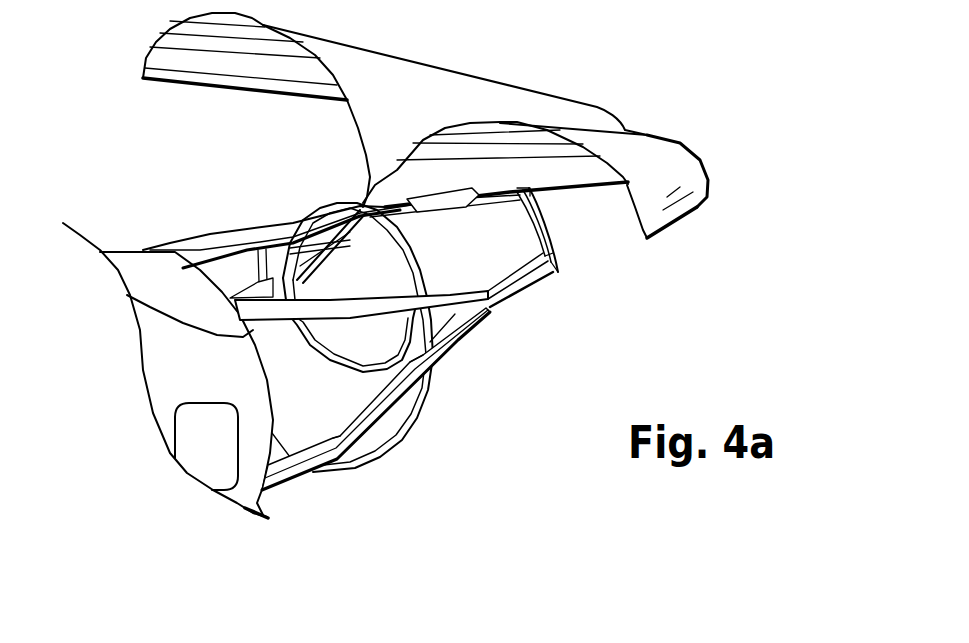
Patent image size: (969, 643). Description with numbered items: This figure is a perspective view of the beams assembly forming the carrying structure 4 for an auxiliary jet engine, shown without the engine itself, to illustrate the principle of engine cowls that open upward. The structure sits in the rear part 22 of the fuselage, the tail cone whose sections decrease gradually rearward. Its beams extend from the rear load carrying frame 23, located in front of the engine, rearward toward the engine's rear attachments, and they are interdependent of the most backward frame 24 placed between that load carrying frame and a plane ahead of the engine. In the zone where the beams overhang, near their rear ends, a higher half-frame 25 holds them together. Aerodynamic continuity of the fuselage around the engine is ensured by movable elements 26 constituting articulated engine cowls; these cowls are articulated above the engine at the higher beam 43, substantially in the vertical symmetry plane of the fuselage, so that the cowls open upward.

The carrying structure 4 is at (372, 493).
The rear part of the fuselage 22 is at (302, 500).
The rear load carrying frame 23 is at (127, 295).
The most backward frame 24 is at (423, 413).
The higher half-frame 25 is at (560, 227).
The movable elements 26 is at (650, 135).
The higher beam 43 is at (247, 243).